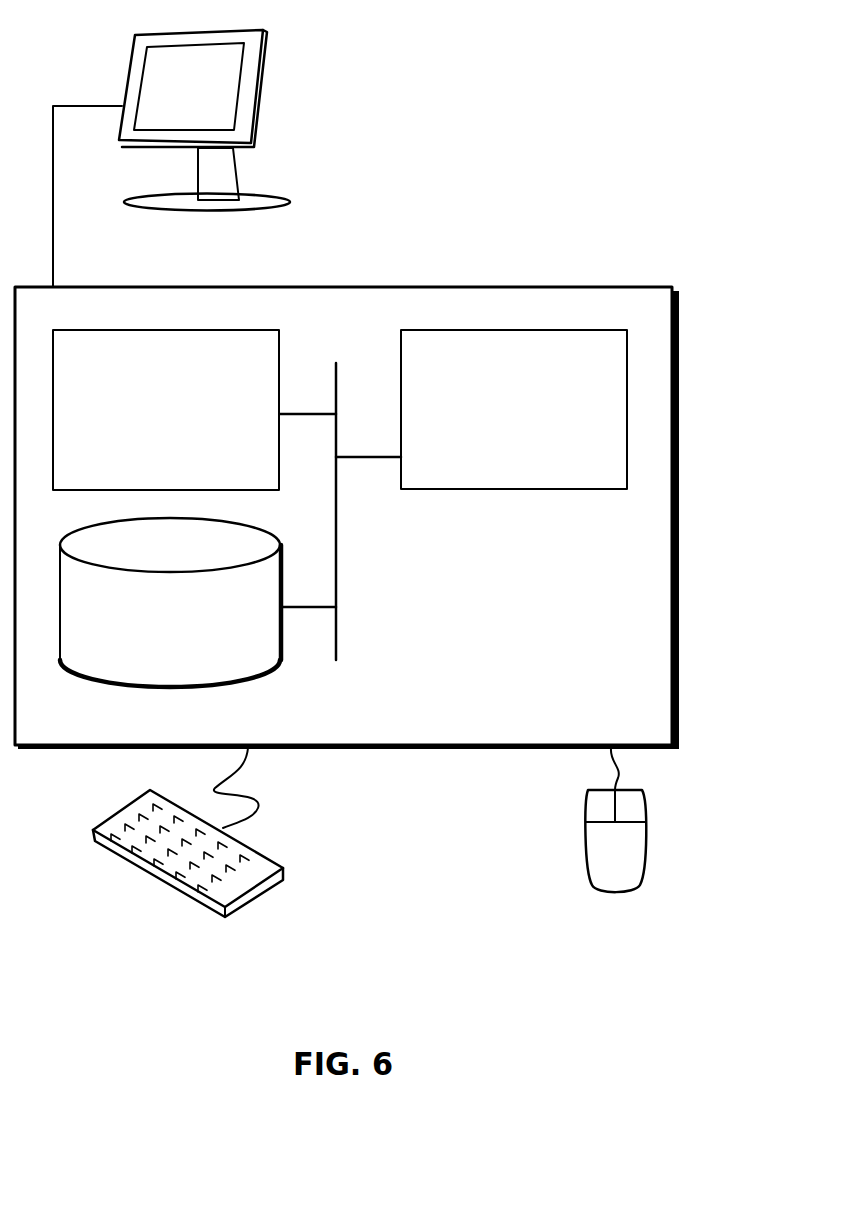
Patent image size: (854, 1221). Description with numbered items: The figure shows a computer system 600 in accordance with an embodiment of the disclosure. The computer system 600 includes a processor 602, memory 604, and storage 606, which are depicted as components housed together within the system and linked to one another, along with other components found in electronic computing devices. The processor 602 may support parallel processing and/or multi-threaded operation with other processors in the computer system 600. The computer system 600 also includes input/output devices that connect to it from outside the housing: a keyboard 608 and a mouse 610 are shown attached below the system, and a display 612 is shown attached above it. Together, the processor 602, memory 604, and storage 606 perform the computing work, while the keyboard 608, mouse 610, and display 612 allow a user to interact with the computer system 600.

The computer system 600 is at (390, 257).
The processor 602 is at (496, 421).
The memory 604 is at (146, 421).
The storage 606 is at (152, 632).
The keyboard 608 is at (112, 853).
The mouse 610 is at (594, 863).
The display 612 is at (171, 158).